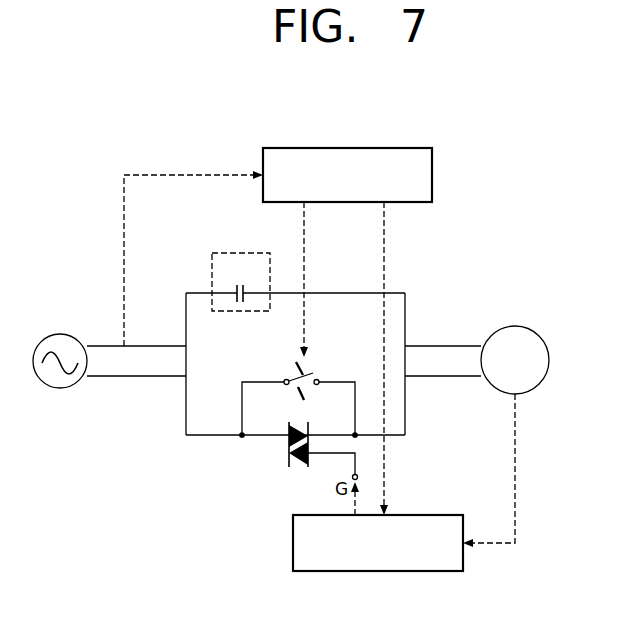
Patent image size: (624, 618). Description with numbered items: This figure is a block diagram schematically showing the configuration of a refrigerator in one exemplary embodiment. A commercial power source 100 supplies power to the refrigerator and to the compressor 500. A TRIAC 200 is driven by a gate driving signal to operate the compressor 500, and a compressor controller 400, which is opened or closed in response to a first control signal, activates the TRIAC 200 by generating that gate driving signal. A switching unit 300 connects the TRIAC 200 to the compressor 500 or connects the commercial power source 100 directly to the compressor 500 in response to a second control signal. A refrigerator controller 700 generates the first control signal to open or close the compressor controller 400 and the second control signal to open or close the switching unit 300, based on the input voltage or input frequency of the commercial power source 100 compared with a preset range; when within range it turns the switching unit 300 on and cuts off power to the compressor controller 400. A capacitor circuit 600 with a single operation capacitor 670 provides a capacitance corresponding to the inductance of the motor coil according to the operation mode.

The commercial power source 100 is at (59, 334).
The TRIAC 200 is at (289, 456).
The switching unit 300 is at (294, 375).
The compressor controller 400 is at (293, 543).
The compressor 500 is at (514, 326).
The capacitor circuit 600 is at (240, 252).
The capacitor 670 is at (242, 282).
The refrigerator controller 700 is at (432, 175).